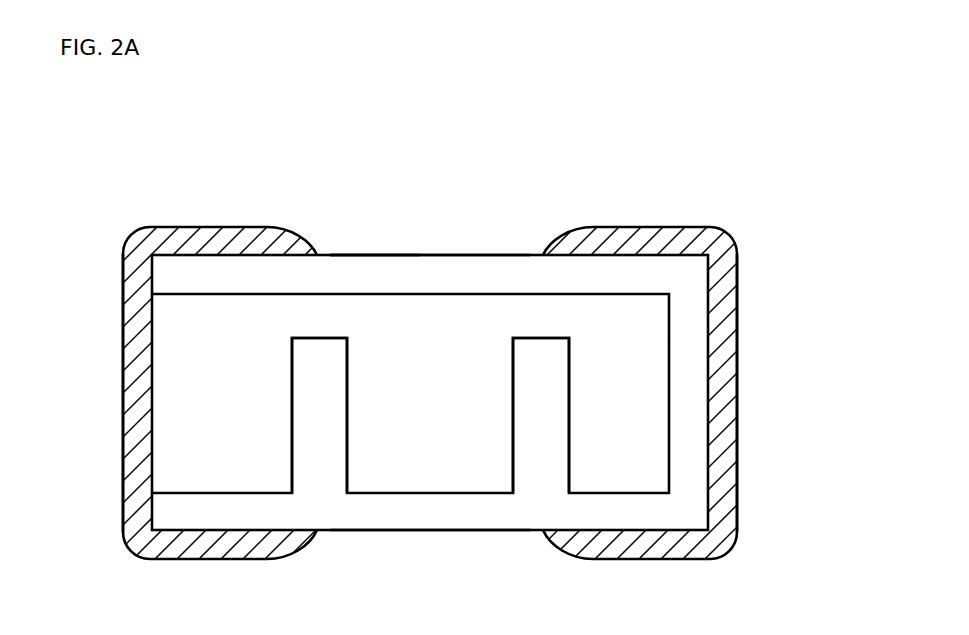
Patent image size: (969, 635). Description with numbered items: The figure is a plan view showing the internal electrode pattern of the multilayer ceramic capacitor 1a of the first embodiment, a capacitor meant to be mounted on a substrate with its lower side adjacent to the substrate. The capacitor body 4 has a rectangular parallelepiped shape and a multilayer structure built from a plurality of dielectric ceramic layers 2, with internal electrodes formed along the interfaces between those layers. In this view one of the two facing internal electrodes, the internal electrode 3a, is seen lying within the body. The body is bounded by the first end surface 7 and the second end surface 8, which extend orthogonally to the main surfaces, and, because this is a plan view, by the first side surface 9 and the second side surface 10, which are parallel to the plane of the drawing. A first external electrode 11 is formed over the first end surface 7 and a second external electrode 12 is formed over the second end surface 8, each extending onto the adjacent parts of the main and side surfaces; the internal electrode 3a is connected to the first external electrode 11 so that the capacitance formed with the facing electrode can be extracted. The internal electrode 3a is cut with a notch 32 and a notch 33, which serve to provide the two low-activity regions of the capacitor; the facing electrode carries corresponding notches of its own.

The multilayer ceramic capacitor 1a is at (152, 143).
The dielectric ceramic layers 2 is at (690, 279).
The internal electrode 3a is at (668, 363).
The capacitor body 4 is at (455, 254).
The first end surface 7 is at (150, 392).
The second end surface 8 is at (735, 410).
The first side surface 9 is at (375, 254).
The second side surface 10 is at (410, 533).
The first external electrode 11 is at (133, 340).
The second external electrode 12 is at (735, 300).
The notch 32 is at (320, 463).
The notch 33 is at (534, 474).